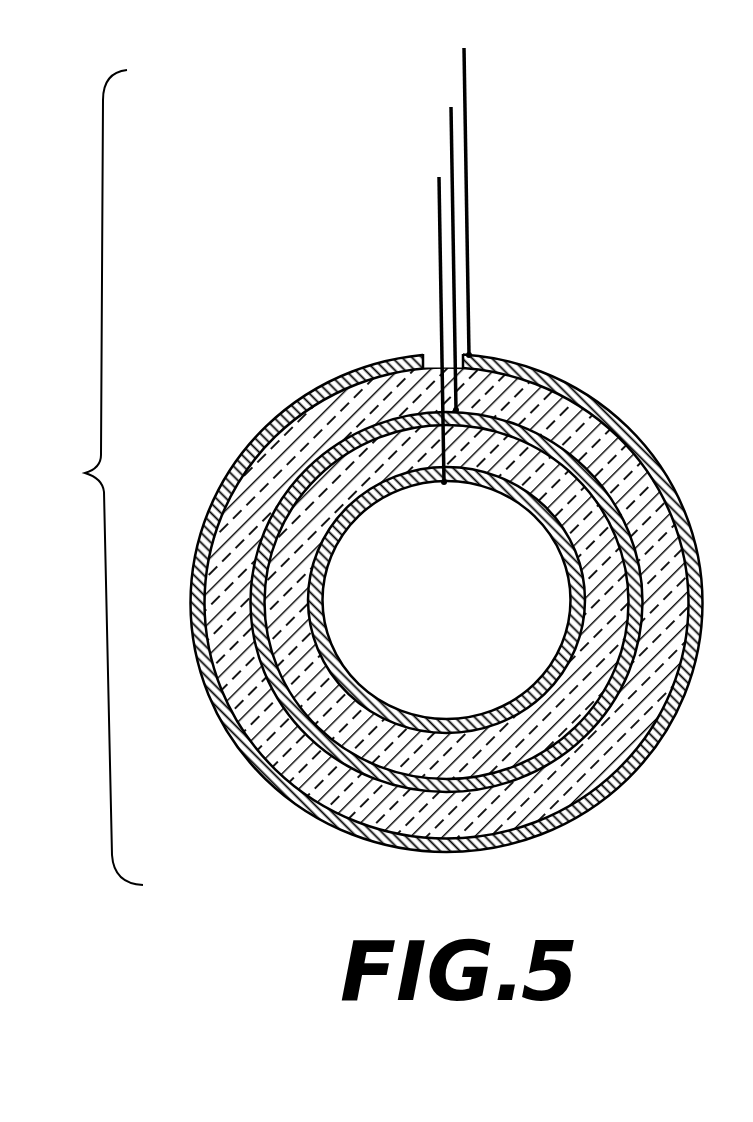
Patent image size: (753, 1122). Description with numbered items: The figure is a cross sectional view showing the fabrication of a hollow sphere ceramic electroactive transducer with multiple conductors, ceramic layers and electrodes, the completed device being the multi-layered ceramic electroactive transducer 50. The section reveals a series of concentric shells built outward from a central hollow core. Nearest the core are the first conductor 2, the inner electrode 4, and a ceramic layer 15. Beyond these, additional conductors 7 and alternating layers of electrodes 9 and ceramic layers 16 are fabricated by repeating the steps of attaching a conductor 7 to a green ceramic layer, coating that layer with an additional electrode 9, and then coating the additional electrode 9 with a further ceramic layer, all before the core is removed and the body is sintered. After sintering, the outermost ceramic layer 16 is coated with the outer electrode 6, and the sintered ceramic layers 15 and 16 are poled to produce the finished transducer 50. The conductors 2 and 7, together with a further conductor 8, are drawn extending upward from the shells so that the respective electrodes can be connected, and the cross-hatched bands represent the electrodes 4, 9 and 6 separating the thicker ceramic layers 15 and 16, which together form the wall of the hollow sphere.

The multi-layered ceramic electroactive transducer 50 is at (90, 477).
The outer conductor 8 is at (464, 65).
The additional conductor 7 is at (452, 143).
The first conductor 2 is at (440, 226).
The outer electrode 6 is at (240, 447).
The additional ceramic layer 16 is at (617, 457).
The inner electrode 4 is at (406, 472).
The additional electrode 9 is at (322, 448).
The ceramic layer 15 is at (533, 453).